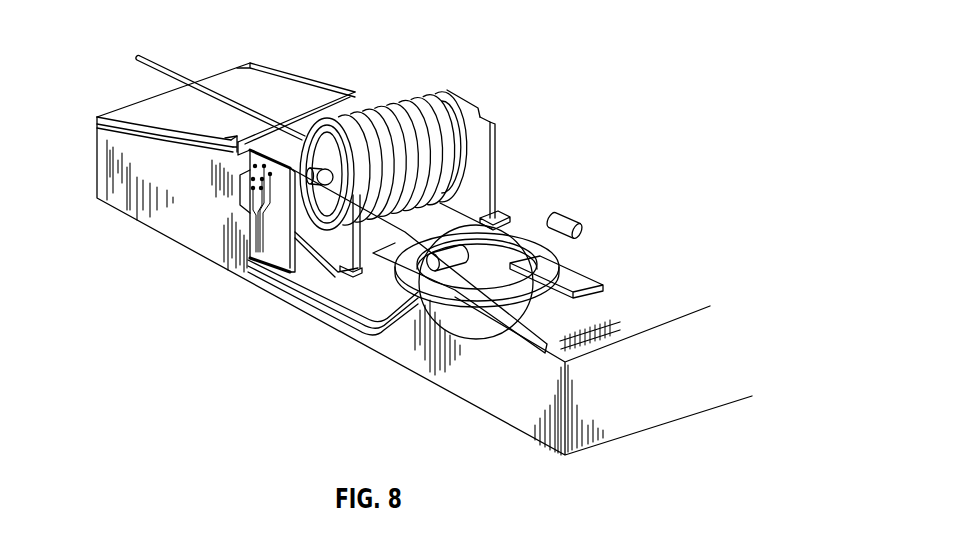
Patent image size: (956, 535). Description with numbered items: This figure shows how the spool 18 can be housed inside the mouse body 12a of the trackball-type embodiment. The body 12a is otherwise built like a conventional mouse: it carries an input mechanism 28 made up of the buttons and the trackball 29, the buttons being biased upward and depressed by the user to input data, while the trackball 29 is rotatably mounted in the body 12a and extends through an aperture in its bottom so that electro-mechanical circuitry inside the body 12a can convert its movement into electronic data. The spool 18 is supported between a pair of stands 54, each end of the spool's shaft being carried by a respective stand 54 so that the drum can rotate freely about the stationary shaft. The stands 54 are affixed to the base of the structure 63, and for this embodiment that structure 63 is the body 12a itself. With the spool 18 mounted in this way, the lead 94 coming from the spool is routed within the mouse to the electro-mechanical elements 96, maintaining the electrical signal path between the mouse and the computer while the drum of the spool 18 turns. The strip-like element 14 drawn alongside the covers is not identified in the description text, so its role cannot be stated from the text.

The body 12a is at (474, 410).
The flexible lead strip 14 is at (139, 58).
The spool 18 is at (387, 78).
The input mechanism 28 is at (152, 107).
The trackball 29 is at (457, 317).
The stand 54 is at (492, 123).
The structure 63 is at (203, 232).
The lead 94 is at (310, 290).
The electro-mechanical elements 96 is at (577, 210).